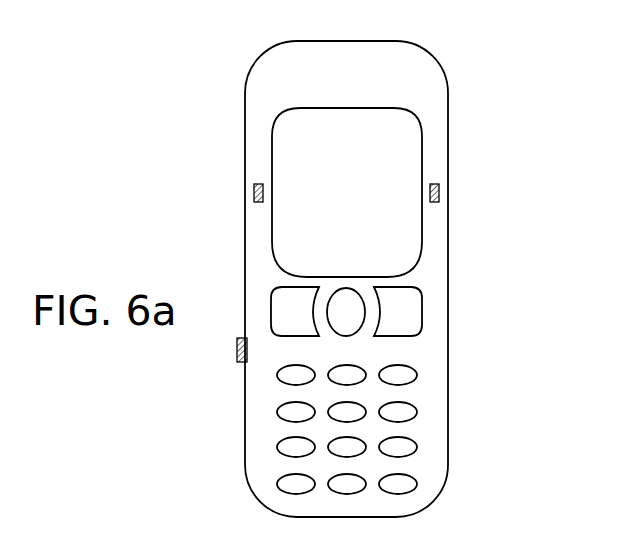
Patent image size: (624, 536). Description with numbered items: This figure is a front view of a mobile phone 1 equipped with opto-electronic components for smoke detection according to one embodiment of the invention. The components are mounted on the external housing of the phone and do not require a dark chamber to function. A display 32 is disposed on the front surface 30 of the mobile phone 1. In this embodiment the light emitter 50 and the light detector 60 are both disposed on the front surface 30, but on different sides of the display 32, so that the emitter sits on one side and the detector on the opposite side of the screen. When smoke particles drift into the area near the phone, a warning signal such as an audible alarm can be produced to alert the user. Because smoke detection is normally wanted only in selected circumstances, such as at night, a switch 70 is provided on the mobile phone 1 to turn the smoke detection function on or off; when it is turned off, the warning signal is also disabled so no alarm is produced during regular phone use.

The mobile phone 1 is at (522, 109).
The front surface 30 is at (360, 84).
The display 32 is at (396, 227).
The light emitter 50 is at (439, 193).
The light detector 60 is at (253, 193).
The switch 70 is at (237, 355).